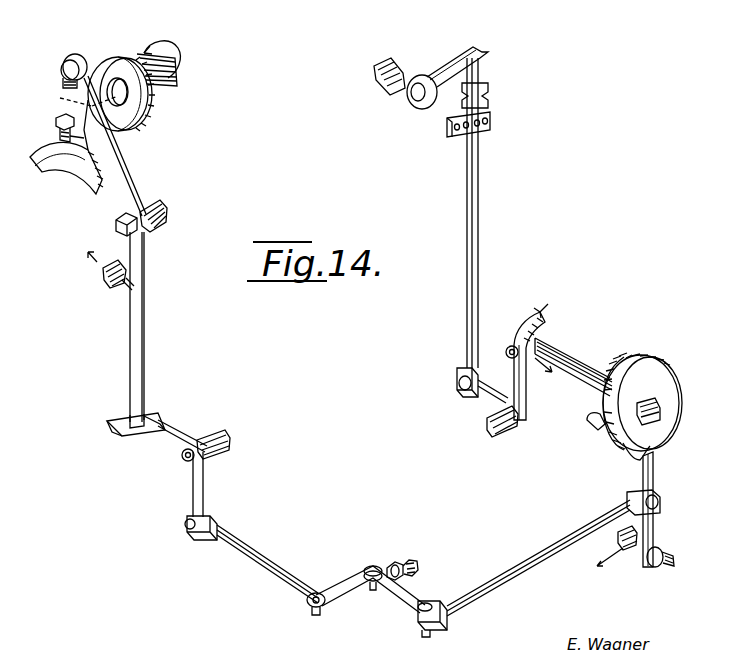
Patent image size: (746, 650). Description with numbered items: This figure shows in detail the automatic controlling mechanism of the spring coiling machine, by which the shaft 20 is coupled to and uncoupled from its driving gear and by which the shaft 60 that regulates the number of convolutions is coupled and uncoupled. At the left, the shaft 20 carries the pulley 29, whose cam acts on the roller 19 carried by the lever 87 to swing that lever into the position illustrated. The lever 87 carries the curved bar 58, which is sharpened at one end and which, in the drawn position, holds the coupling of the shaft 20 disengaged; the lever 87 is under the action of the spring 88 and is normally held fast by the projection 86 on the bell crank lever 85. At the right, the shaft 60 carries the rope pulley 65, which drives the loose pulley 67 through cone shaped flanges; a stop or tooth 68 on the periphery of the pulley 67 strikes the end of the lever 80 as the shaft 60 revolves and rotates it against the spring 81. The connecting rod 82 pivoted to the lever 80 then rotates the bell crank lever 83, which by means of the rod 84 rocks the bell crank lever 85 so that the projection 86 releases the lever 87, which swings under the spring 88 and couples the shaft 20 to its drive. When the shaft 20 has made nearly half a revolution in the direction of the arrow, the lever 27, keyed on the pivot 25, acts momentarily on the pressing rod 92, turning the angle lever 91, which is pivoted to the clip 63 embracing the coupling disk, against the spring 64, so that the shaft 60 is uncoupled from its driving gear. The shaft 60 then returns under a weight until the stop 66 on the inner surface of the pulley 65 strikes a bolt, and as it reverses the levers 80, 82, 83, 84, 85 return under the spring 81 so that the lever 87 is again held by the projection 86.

The roller 19 is at (86, 62).
The shaft 20 is at (174, 57).
The pulley 29 is at (168, 124).
The curved bar 58 is at (68, 160).
The lever 87 is at (138, 331).
The spring 88 is at (110, 283).
The projection 86 is at (150, 412).
The bell crank lever 85 is at (198, 486).
The rod 84 is at (260, 558).
The bell crank lever 83 is at (400, 598).
The connecting rod 82 is at (527, 563).
The spring 81 is at (640, 540).
The lever 80 is at (654, 490).
The stop or tooth 68 is at (637, 457).
The stop 66 is at (596, 424).
The rope pulley 65 is at (623, 362).
The loose pulley 67 is at (653, 358).
The shaft 60 is at (577, 361).
The spring 64 is at (533, 371).
The clip 63 is at (541, 312).
The angle lever 91 is at (487, 398).
The pressing rod 92 is at (478, 222).
The pivot 25 is at (394, 64).
The lever 27 is at (455, 58).